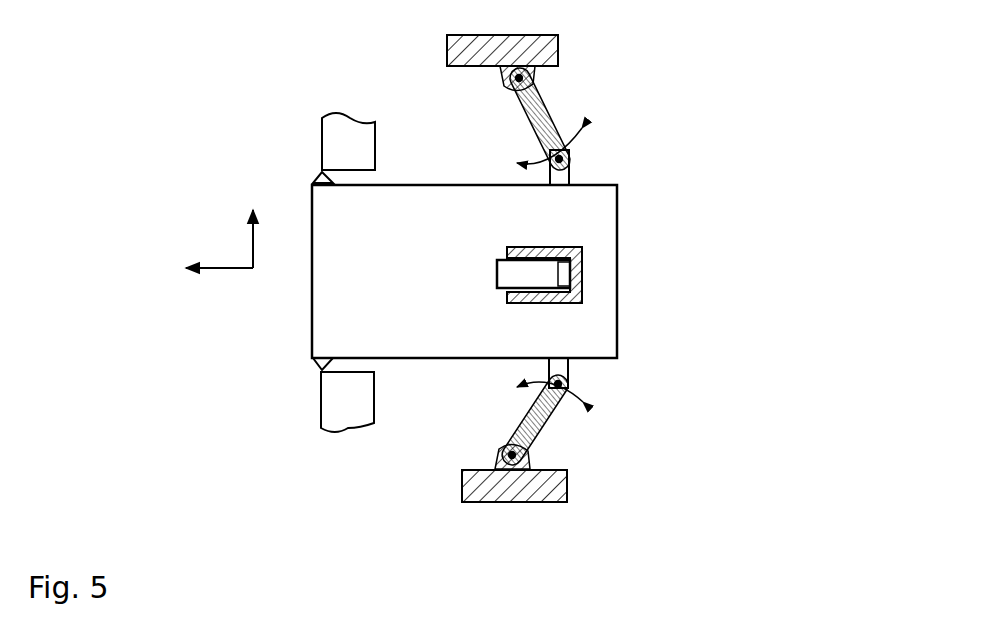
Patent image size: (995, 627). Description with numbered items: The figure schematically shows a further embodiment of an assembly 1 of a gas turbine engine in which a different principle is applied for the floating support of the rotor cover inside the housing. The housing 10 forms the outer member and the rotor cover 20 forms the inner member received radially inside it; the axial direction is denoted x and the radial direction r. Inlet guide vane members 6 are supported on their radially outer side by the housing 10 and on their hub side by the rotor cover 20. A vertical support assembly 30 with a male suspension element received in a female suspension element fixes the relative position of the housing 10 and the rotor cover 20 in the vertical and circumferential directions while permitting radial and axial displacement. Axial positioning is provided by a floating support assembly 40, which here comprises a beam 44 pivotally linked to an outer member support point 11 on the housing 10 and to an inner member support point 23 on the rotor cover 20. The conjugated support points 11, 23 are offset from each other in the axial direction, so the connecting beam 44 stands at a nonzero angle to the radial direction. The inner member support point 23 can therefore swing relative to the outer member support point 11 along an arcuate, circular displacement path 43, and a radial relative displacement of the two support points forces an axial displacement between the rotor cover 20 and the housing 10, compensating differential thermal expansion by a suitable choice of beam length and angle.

The assembly 1 is at (262, 333).
The inlet guide vane members 6 is at (355, 150).
The housing 10 is at (446, 50).
The outer member support point 11 is at (523, 80).
The rotor cover 20 is at (451, 182).
The inner member support point 23 is at (567, 163).
The vertical support assembly 30 is at (598, 271).
The floating support assembly 40 is at (570, 266).
The displacement path 43 is at (588, 134).
The beam 44 is at (527, 118).